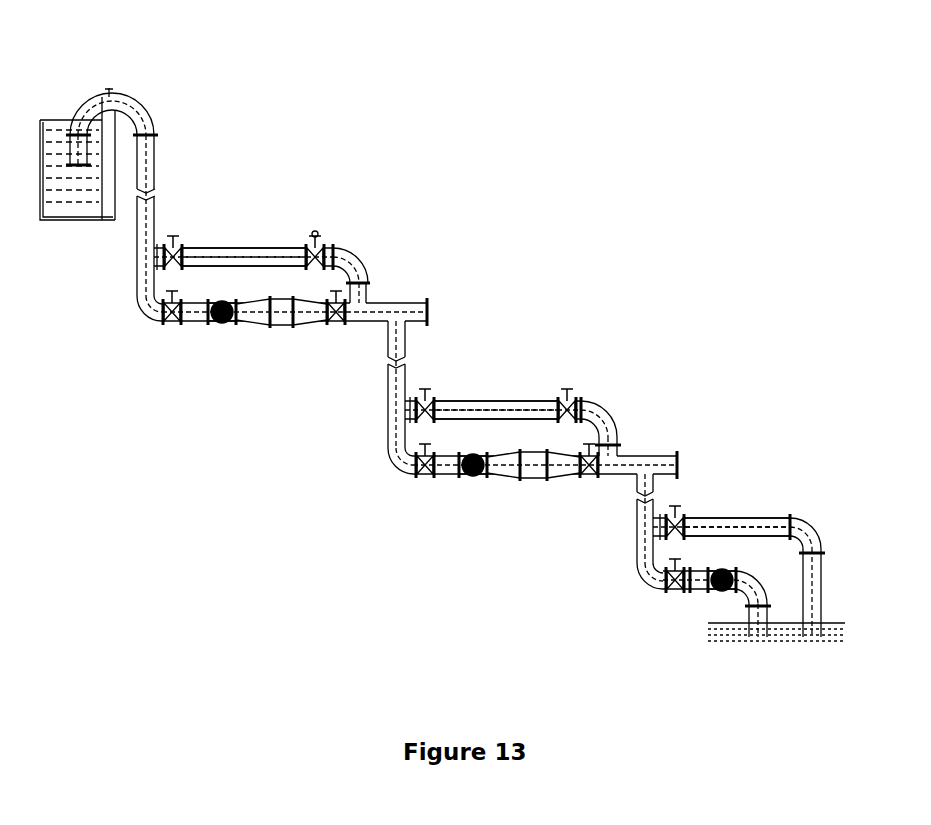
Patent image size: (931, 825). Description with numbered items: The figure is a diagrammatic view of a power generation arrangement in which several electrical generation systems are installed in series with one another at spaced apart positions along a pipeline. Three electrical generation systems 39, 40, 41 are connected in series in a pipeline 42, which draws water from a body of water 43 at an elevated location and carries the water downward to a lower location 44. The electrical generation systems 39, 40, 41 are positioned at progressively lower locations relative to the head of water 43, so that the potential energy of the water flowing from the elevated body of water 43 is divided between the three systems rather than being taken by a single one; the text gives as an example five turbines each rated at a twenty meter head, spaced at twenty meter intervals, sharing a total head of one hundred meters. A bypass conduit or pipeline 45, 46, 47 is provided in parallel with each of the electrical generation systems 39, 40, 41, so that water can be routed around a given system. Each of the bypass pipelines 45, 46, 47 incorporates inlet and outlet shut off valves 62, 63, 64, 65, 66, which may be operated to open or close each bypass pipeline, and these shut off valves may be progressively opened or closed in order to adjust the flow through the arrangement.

The electrical generation system 39 is at (214, 345).
The electrical generation system 40 is at (468, 495).
The electrical generation system 41 is at (714, 607).
The pipeline 42 is at (388, 278).
The body of water 43 is at (53, 126).
The lower location 44 is at (797, 638).
The bypass pipeline 45 is at (225, 218).
The bypass pipeline 46 is at (506, 379).
The bypass pipeline 47 is at (749, 502).
The shut off valve 62 is at (182, 222).
The shut off valve 63 is at (317, 218).
The shut off valve 64 is at (432, 369).
The shut off valve 65 is at (570, 369).
The shut off valve 66 is at (682, 490).